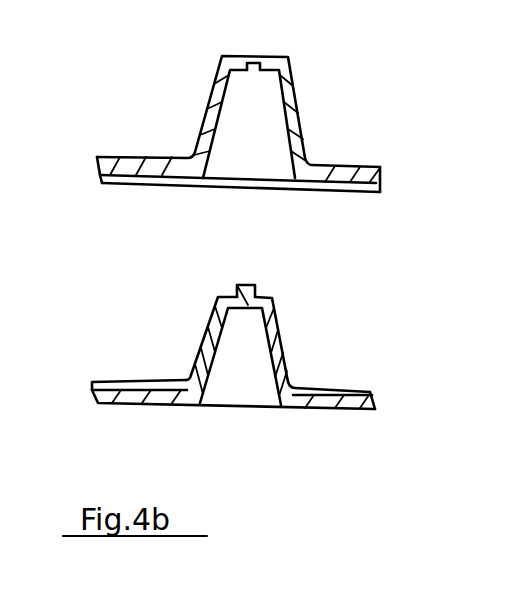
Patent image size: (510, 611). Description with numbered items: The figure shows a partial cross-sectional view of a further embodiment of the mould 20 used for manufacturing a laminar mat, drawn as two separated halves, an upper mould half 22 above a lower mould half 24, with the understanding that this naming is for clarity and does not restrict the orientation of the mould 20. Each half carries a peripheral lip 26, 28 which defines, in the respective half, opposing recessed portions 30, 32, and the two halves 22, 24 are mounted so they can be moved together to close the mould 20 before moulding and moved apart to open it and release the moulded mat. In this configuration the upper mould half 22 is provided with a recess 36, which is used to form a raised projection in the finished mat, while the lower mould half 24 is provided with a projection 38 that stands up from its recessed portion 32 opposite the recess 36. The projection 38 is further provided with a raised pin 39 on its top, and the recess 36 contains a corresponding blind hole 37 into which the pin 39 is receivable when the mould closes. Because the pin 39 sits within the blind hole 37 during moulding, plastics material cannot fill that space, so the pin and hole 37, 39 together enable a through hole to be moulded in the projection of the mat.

The mould 20 is at (69, 111).
The upper mould half 22 is at (131, 157).
The lower mould half 24 is at (117, 405).
The peripheral lip 26 is at (370, 193).
The peripheral lip 28 is at (360, 388).
The recessed portion 30 is at (140, 178).
The recessed portion 32 is at (130, 381).
The recess 36 is at (262, 75).
The blind hole 37 is at (253, 66).
The projection 38 is at (267, 295).
The raised pin 39 is at (238, 292).